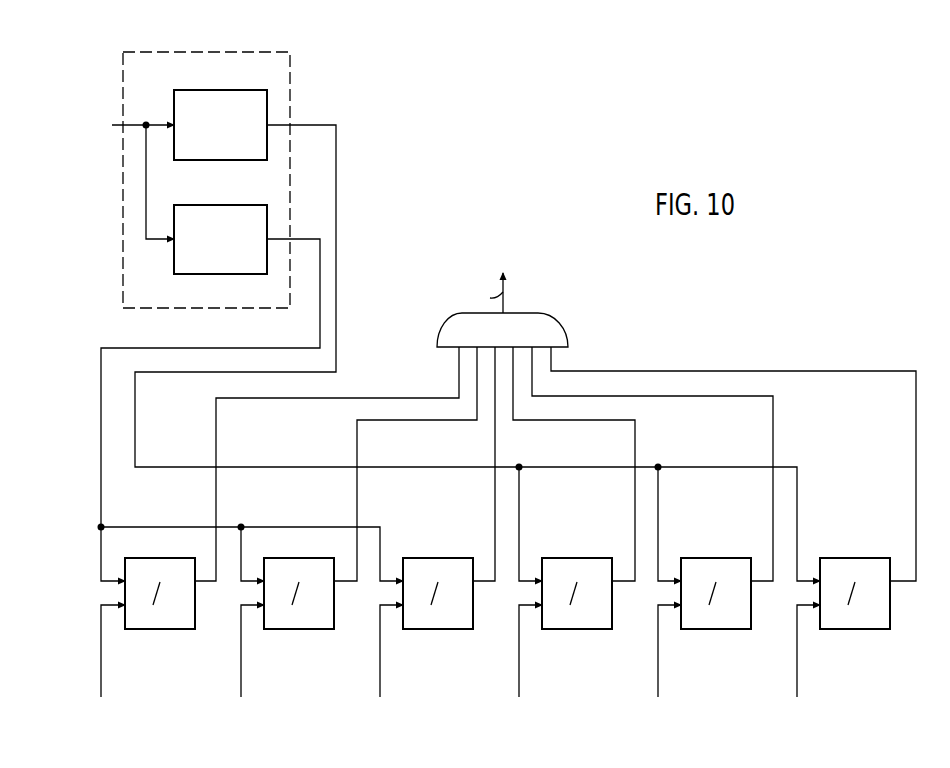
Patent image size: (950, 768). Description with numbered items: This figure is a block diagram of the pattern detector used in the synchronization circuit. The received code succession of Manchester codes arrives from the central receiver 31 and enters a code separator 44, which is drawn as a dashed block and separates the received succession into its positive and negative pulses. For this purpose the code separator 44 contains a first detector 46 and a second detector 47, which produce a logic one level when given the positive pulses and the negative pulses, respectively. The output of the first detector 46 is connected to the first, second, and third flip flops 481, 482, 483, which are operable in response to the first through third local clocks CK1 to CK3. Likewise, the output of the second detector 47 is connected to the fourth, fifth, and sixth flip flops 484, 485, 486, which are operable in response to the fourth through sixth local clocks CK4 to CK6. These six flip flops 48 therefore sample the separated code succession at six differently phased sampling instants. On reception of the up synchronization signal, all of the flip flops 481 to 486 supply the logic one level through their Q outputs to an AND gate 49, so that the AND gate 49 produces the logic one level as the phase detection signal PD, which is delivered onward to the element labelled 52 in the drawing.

The central receiver 31 is at (108, 166).
The code separator 44 is at (162, 52).
The first detector 46 is at (208, 205).
The second detector 47 is at (208, 90).
The flip flops 48 is at (491, 644).
The first flip flop 481 is at (143, 631).
The second flip flop 482 is at (282, 631).
The third flip flop 483 is at (420, 631).
The fourth flip flop 484 is at (552, 631).
The fifth flip flop 485 is at (700, 631).
The sixth flip flop 486 is at (828, 631).
The AND gate 49 is at (555, 322).
The output destination 52 is at (508, 281).